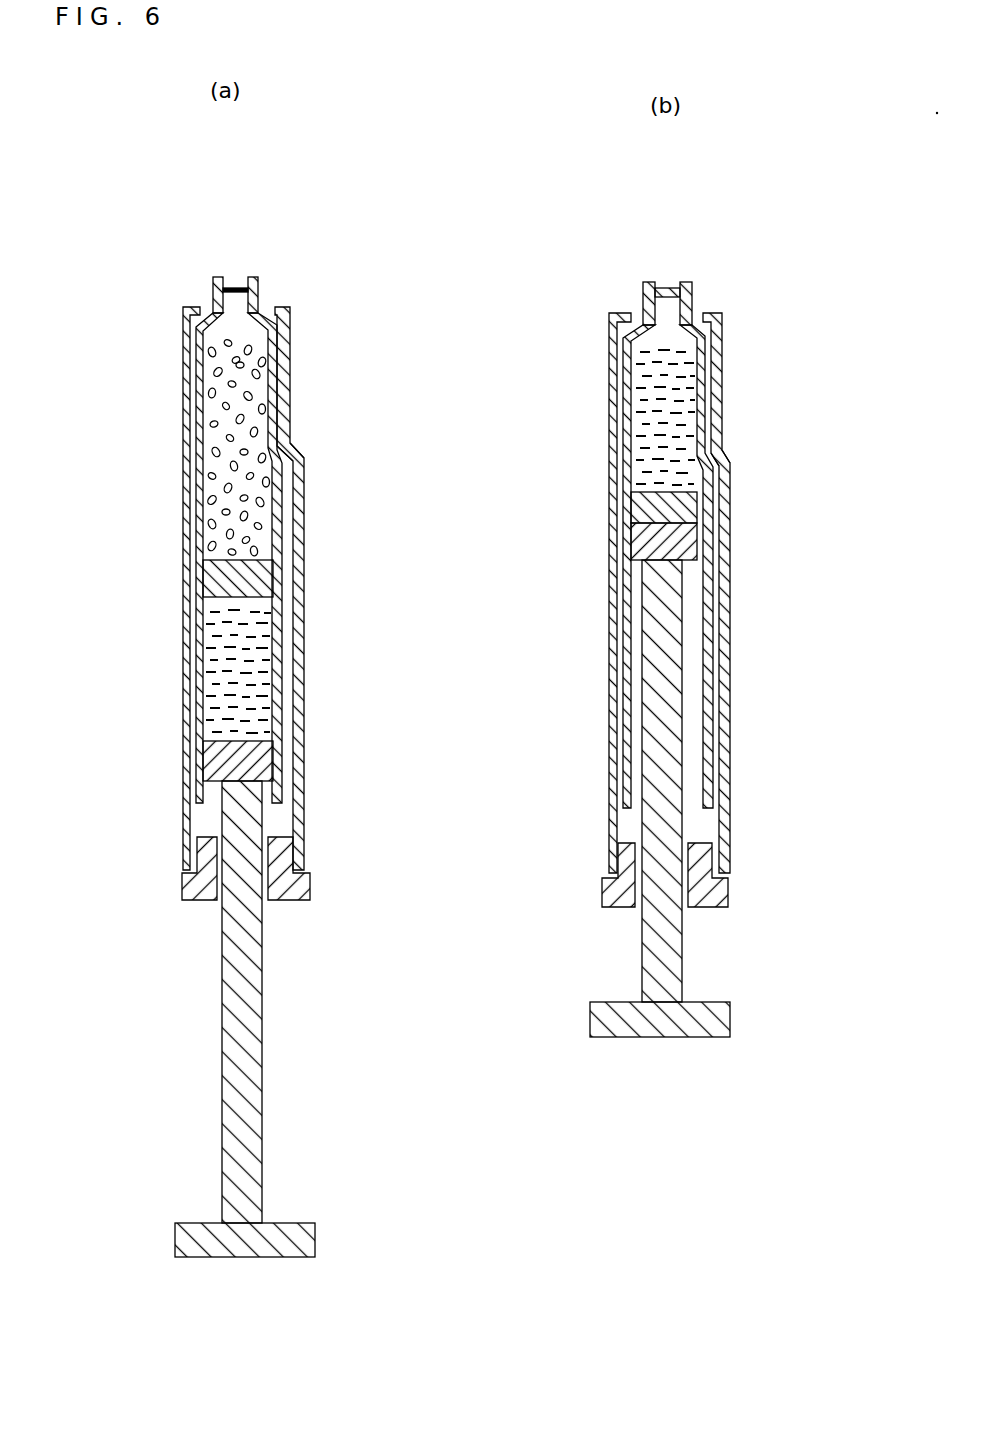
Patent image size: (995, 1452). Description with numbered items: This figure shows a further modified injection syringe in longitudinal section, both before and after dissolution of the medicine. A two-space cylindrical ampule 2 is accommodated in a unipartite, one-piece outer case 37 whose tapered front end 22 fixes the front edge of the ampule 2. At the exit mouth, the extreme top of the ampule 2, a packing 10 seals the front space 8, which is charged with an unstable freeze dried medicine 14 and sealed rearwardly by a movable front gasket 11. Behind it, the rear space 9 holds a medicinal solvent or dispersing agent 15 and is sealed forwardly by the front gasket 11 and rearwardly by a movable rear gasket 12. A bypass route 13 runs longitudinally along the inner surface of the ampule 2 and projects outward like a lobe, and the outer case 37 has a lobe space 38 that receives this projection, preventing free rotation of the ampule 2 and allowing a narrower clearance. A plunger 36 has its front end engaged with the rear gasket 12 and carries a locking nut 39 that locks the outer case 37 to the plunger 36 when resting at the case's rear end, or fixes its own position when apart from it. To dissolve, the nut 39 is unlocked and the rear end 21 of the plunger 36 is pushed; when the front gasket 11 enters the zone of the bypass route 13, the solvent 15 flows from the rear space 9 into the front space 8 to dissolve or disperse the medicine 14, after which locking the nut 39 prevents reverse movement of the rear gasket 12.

The two-space cylindrical ampule 2 is at (292, 343).
The front space 8 is at (258, 413).
The rear space 9 is at (267, 723).
The packing 10 is at (236, 277).
The front gasket 11 is at (262, 573).
The rear gasket 12 is at (263, 765).
The bypass route 13 is at (292, 495).
The unstable freeze dried medicine 14 is at (263, 362).
The medicinal solvent or dispersing agent 15 is at (260, 693).
The rear end of the plunger 21 is at (316, 1240).
The front end of the outer case 22 is at (285, 307).
The plunger 36 is at (240, 1072).
The outer case 37 is at (185, 622).
The lobe space 38 is at (290, 657).
The locking nut 39 is at (197, 888).